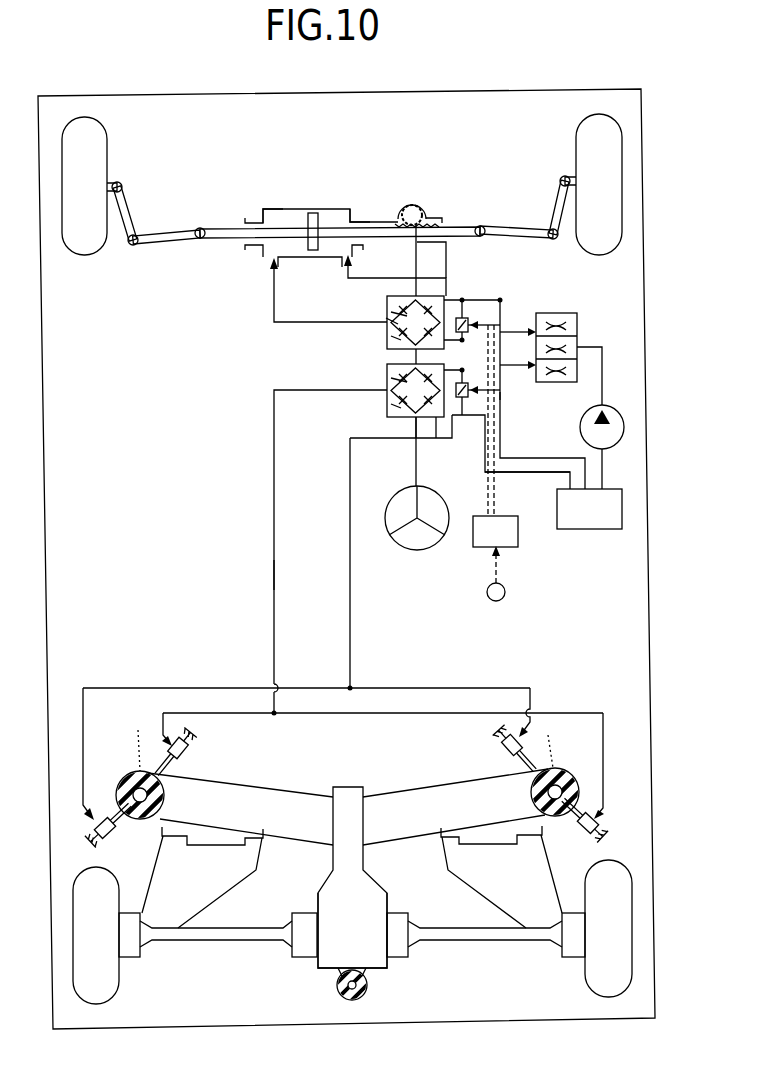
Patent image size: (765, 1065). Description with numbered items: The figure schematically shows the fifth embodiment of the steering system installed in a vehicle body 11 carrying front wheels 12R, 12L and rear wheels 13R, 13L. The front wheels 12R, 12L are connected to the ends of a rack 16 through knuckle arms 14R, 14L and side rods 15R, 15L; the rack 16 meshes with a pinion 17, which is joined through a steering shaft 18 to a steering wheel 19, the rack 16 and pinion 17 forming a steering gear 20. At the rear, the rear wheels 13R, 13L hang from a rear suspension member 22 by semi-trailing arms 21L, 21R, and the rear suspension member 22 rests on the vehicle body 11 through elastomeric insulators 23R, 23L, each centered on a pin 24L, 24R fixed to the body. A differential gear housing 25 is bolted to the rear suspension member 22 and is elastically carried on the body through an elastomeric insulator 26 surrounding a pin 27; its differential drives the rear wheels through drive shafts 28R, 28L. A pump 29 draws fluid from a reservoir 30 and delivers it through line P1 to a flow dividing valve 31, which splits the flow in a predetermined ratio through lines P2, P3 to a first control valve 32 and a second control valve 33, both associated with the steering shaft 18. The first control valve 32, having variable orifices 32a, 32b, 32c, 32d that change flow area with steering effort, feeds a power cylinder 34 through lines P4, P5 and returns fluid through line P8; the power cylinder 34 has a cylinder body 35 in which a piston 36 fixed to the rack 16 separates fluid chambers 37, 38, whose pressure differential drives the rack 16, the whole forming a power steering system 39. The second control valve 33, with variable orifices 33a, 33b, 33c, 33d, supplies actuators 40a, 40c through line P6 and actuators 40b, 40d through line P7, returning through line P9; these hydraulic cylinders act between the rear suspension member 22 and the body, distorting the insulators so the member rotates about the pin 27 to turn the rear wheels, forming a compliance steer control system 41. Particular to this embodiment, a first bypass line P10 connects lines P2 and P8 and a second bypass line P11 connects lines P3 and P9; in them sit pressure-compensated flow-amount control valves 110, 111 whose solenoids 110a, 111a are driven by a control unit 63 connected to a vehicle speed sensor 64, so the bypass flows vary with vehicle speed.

The vehicle body 11 is at (430, 93).
The front wheel 12L is at (79, 246).
The front wheel 12R is at (613, 158).
The rear wheel 13L is at (112, 988).
The rear wheel 13R is at (590, 986).
The knuckle arm 14L is at (128, 198).
The knuckle arm 14R is at (557, 200).
The side rod 15L is at (146, 248).
The side rod 15R is at (510, 228).
The rack 16 is at (216, 226).
The pinion 17 is at (410, 204).
The steering shaft 18 is at (440, 255).
The steering wheel 19 is at (440, 537).
The steering gear 20 is at (435, 195).
The semi-trailing arm 21L is at (230, 879).
The semi-trailing arm 21R is at (483, 883).
The rear suspension member 22 is at (376, 797).
The elastomeric insulator 23L is at (135, 775).
The elastomeric insulator 23R is at (566, 775).
The pin 24L is at (138, 731).
The pin 24R is at (548, 737).
The differential gear housing 25 is at (364, 930).
The elastomeric insulator 26 is at (338, 992).
The pin 27 is at (365, 988).
The drive shaft 28L is at (220, 941).
The drive shaft 28R is at (490, 941).
The pump 29 is at (582, 434).
The reservoir 30 is at (604, 520).
The flow dividing valve 31 is at (577, 320).
The first control valve 32 is at (379, 312).
The variable orifice 32a is at (402, 312).
The variable orifice 32b is at (402, 343).
The variable orifice 32c is at (395, 326).
The variable orifice 32d is at (488, 289).
The second control valve 33 is at (382, 414).
The variable orifice 33a is at (402, 380).
The variable orifice 33b is at (402, 404).
The variable orifice 33c is at (432, 416).
The variable orifice 33d is at (411, 417).
The power cylinder 34 is at (313, 201).
The cylinder body 35 is at (338, 207).
The piston 36 is at (313, 213).
The fluid chamber 37 is at (283, 209).
The fluid chamber 38 is at (356, 214).
The power steering system 39 is at (246, 270).
The actuator 40a is at (190, 750).
The actuator 40b is at (112, 840).
The actuator 40c is at (582, 838).
The actuator 40d is at (500, 750).
The compliance steer control system 41 is at (266, 573).
The control unit 63 is at (518, 532).
The vehicle speed sensor 64 is at (505, 588).
The first pressure-compensated flow-amount control valve 110 is at (521, 325).
The solenoid 110a is at (502, 318).
The second pressure-compensated flow-amount control valve 111 is at (507, 429).
The solenoid 111a is at (498, 395).
The line P1 is at (602, 395).
The line P2 is at (486, 326).
The line P3 is at (512, 365).
The line P4 is at (273, 280).
The line P5 is at (354, 270).
The line P6 is at (272, 505).
The line P7 is at (348, 572).
The line P8 is at (496, 442).
The line P9 is at (530, 472).
The first bypass line P10 is at (470, 318).
The second bypass line P11 is at (470, 401).